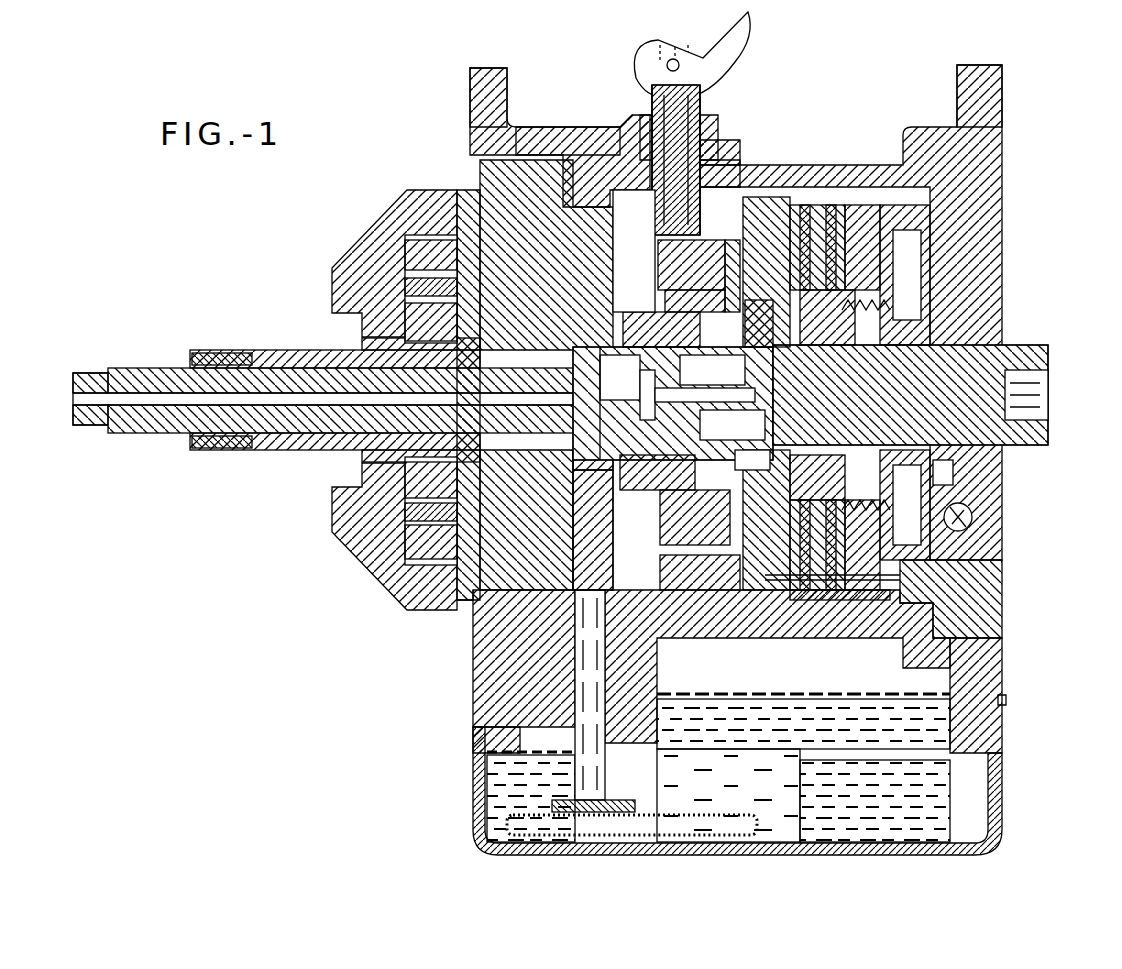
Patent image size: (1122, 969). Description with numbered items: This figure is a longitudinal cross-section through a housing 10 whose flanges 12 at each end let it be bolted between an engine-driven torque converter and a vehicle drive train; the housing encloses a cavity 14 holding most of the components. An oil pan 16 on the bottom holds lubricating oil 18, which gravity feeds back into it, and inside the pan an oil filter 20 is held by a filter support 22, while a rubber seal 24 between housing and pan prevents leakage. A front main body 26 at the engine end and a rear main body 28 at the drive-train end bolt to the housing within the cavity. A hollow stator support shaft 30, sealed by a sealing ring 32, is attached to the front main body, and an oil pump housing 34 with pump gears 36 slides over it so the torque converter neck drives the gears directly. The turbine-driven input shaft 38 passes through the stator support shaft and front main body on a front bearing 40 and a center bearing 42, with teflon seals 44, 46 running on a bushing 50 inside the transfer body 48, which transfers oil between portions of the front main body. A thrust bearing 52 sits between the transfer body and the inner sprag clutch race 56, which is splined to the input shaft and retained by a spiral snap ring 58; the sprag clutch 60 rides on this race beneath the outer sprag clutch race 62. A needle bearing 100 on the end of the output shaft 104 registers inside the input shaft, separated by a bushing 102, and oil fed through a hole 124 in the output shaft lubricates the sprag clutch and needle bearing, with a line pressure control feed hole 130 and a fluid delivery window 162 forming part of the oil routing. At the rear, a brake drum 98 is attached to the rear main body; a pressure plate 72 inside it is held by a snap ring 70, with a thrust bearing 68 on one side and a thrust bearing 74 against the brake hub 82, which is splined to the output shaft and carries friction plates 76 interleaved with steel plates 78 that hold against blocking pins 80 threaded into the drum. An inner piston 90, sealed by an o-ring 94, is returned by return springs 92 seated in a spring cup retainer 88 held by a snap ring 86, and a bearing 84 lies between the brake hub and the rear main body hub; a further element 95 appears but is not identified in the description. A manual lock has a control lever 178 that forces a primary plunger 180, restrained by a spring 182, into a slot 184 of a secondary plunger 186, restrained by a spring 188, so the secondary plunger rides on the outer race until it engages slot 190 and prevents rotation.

The housing 10 is at (925, 127).
The flanges 12 is at (492, 68).
The cavity 14 is at (643, 167).
The oil pan 16 is at (1003, 815).
The lubricating oil 18 is at (925, 790).
The oil filter 20 is at (757, 825).
The filter support 22 is at (615, 797).
The rubber seal 24 is at (1008, 700).
The front main body 26 is at (470, 618).
The rear main body 28 is at (1005, 608).
The stator support shaft 30 is at (285, 450).
The sealing ring 32 is at (463, 193).
The oil pump housing 34 is at (405, 190).
The pump gears 36 is at (400, 322).
The input shaft 38 is at (150, 437).
The front bearing 40 is at (215, 452).
The center bearing 42 is at (520, 340).
The seal 44 is at (566, 520).
The seal 46 is at (568, 482).
The transfer body 48 is at (568, 530).
The bushing 50 is at (656, 285).
The thrust bearing 52 is at (660, 312).
The inner sprag clutch race 56 is at (572, 403).
The spiral snap ring 58 is at (673, 403).
The sprag clutch 60 is at (662, 510).
The outer sprag clutch race 62 is at (621, 693).
The thrust bearing 68 is at (755, 455).
The snap ring 70 is at (760, 592).
The pressure plate 72 is at (745, 565).
The thrust bearing 74 is at (797, 455).
The friction plates 76 is at (875, 598).
The steel plates 78 is at (840, 595).
The blocking pins 80 is at (800, 600).
The brake hub 82 is at (812, 495).
The bearing 84 is at (855, 498).
The snap ring 86 is at (875, 440).
The spring cup retainer 88 is at (830, 308).
The inner piston 90 is at (895, 450).
The return springs 92 is at (855, 330).
The o-ring 94 is at (870, 325).
The output shaft 95 is at (910, 395).
The brake drum 98 is at (800, 190).
The needle bearing 100 is at (732, 423).
The bushing 102 is at (684, 350).
The output shaft 104 is at (1008, 350).
The hole 124 is at (782, 347).
The line pressure control feed hole 130 is at (972, 520).
The fluid delivery window 162 is at (955, 478).
The control lever 178 is at (745, 45).
The primary plunger 180 is at (655, 85).
The spring 182 is at (712, 115).
The slot 184 is at (632, 210).
The secondary plunger 186 is at (722, 150).
The spring 188 is at (722, 162).
The slot 190 is at (690, 565).